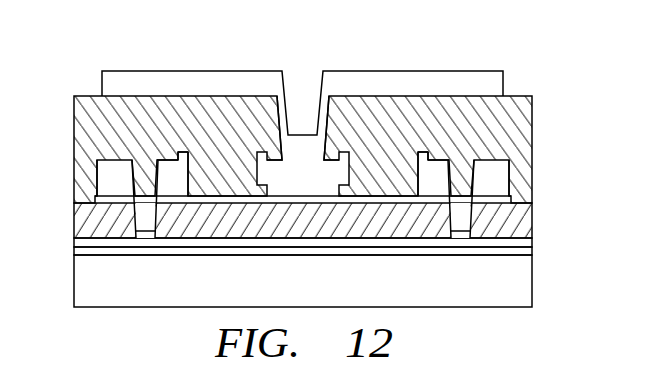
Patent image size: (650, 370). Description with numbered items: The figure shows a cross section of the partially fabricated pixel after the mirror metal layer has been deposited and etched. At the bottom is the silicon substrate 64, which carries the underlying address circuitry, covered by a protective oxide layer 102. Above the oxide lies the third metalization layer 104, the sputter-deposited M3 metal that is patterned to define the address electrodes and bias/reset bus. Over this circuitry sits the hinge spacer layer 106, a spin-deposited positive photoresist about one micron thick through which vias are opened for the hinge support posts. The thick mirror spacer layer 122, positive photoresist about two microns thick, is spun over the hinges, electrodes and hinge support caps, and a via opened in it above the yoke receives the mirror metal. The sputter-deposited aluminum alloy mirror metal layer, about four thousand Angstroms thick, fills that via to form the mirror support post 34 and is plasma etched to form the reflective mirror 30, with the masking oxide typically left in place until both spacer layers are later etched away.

The mirror 30 is at (473, 71).
The mirror support post 34 is at (278, 115).
The silicon substrate 64 is at (532, 285).
The protective oxide layer 102 is at (533, 254).
The third metalization layer 104 is at (532, 243).
The hinge spacer layer 106 is at (532, 218).
The mirror spacer layer 122 is at (525, 125).